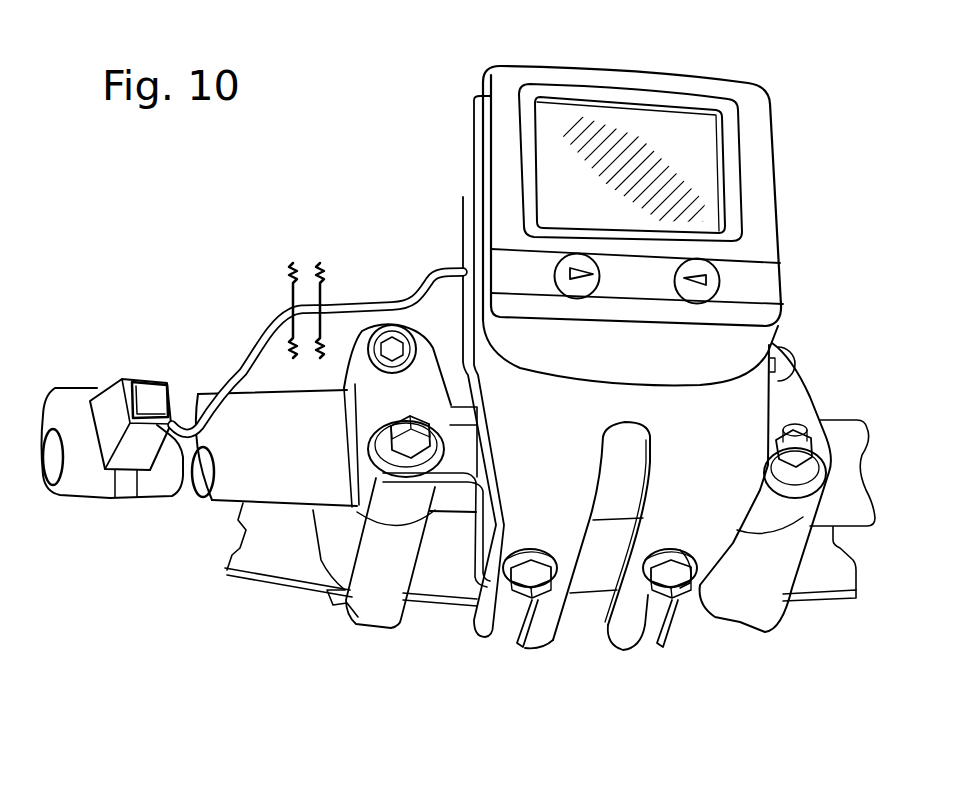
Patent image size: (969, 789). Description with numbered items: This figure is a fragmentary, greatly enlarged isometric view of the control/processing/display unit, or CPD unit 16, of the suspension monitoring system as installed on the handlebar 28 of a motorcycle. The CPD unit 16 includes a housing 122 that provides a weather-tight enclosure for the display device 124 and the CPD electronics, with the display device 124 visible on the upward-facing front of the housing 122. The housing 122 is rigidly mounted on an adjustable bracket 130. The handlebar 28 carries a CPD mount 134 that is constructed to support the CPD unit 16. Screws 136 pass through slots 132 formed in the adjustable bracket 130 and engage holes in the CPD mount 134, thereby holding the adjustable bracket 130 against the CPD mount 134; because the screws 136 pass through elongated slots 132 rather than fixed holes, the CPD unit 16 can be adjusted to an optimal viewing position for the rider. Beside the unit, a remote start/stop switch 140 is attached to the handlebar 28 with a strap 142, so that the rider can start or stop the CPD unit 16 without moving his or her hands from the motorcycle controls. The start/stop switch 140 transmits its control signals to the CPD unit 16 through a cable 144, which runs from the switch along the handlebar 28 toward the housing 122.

The control/processing/display (CPD) unit 16 is at (745, 61).
The handlebar 28 is at (227, 482).
The housing 122 is at (757, 207).
The display device 124 is at (545, 168).
The adjustable bracket 130 is at (760, 424).
The slots 132 is at (507, 620).
The CPD mount 134 is at (462, 450).
The screws 136 is at (532, 587).
The remote start/stop switch 140 is at (143, 397).
The strap 142 is at (118, 487).
The cable 144 is at (273, 311).